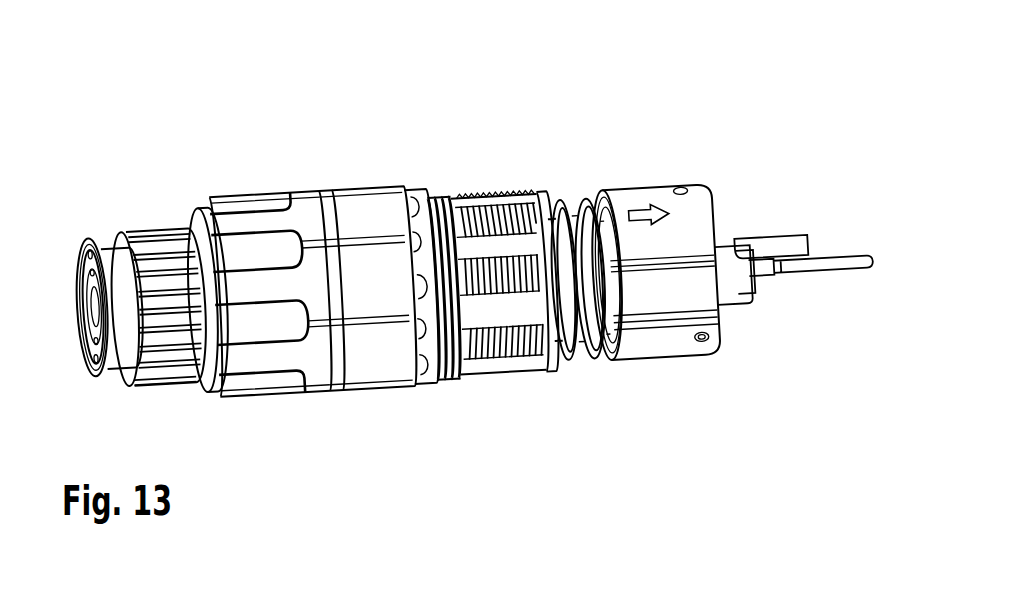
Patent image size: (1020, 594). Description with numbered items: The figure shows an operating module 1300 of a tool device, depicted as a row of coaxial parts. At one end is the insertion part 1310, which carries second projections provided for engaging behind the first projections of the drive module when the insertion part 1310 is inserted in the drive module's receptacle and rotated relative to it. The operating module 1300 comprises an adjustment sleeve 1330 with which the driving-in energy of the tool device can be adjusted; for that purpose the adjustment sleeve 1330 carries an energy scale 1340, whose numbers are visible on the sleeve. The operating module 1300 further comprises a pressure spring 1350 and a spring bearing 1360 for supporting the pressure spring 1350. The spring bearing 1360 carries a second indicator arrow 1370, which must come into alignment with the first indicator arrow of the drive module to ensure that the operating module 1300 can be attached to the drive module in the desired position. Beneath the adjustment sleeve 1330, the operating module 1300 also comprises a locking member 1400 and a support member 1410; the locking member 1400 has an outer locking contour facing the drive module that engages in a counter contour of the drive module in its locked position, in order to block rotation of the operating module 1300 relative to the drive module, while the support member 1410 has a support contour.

The operating module 1300 is at (172, 90).
The insertion part 1310 is at (731, 262).
The adjustment sleeve 1330 is at (300, 222).
The energy scale 1340 is at (387, 193).
The pressure spring 1350 is at (567, 355).
The spring bearing 1360 is at (655, 303).
The second indicator arrow 1370 is at (637, 212).
The locking member 1400 is at (422, 365).
The support member 1410 is at (205, 328).